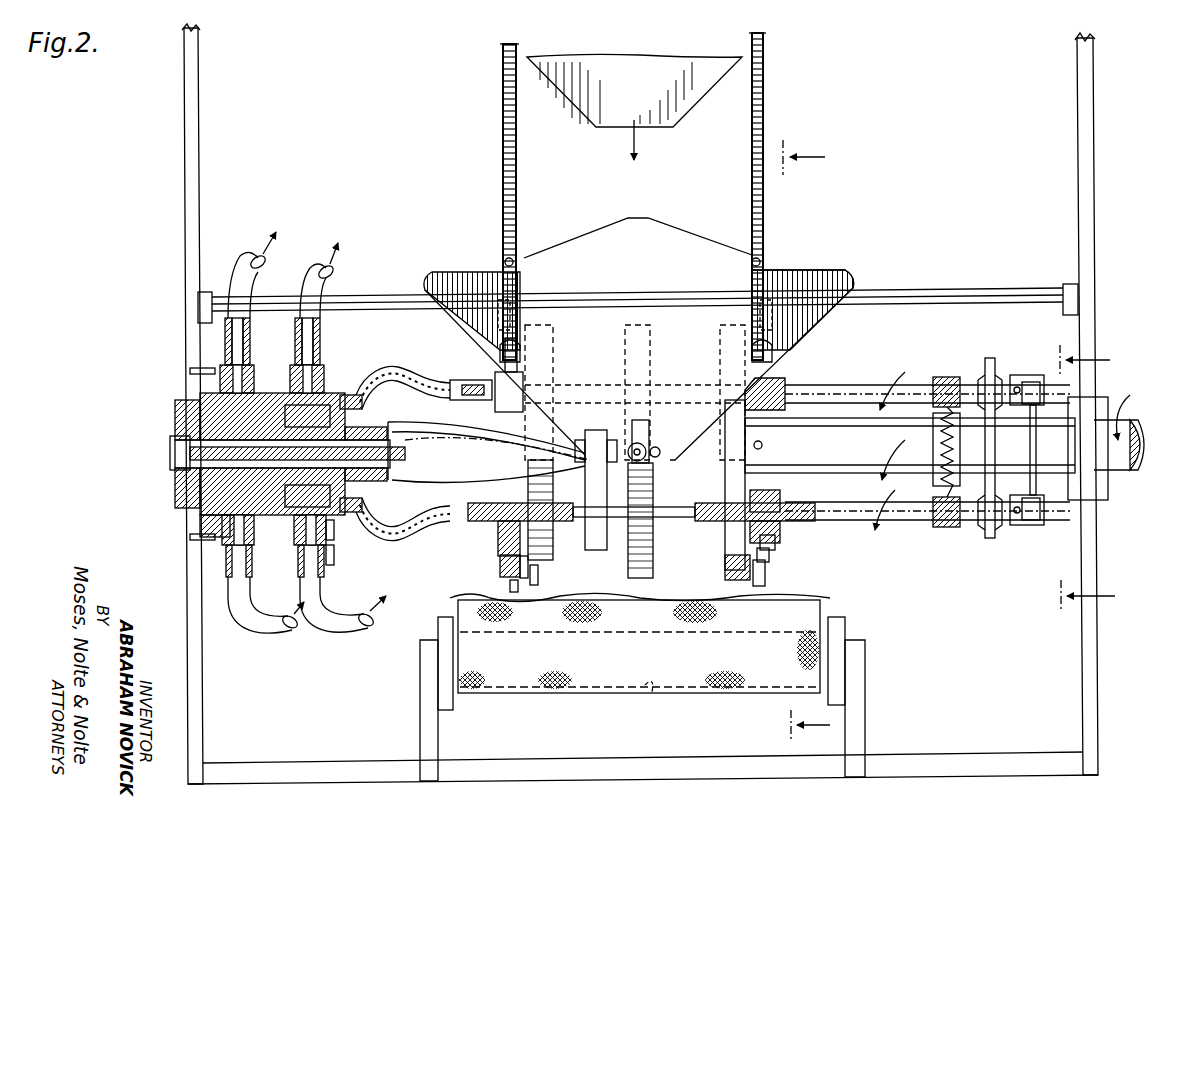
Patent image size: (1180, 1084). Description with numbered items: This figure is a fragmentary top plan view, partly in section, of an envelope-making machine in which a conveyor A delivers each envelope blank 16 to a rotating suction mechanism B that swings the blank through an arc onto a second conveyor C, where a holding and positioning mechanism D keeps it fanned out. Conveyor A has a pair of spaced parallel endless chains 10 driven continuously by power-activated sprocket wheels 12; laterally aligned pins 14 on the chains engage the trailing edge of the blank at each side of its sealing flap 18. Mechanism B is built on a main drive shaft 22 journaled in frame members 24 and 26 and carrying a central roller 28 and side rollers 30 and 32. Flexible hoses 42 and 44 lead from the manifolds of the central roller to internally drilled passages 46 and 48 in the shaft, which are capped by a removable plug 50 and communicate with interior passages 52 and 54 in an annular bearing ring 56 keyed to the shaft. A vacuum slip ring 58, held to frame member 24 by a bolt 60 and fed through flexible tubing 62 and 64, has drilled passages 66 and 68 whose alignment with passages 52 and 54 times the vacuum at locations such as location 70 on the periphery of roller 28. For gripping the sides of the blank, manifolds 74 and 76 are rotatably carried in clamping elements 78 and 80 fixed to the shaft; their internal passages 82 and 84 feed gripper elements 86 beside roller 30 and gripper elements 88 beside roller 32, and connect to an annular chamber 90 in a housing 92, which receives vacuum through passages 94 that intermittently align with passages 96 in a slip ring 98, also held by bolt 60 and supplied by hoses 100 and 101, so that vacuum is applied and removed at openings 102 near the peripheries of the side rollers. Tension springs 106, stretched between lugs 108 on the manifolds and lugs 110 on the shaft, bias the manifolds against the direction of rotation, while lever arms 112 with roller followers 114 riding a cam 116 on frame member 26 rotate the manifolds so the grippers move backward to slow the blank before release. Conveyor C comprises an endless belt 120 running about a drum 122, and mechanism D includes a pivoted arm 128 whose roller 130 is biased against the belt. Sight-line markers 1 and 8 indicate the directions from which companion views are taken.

The endless chain 10 is at (503, 75).
The sprocket wheel 12 is at (522, 300).
The pin 14 is at (505, 262).
The envelope blank 16 is at (706, 55).
The sealing flap 18 is at (664, 233).
The main drive shaft 22 is at (1158, 412).
The frame member 24 is at (185, 175).
The frame member 26 is at (1088, 138).
The central roller 28 is at (655, 578).
The side roller 30 is at (560, 580).
The side roller 32 is at (725, 560).
The flexible hose 42 is at (440, 420).
The flexible hose 44 is at (440, 468).
The internally drilled passage 46 is at (352, 396).
The internally drilled passage 48 is at (352, 512).
The removable plug 50 is at (170, 445).
The interior passage 52 is at (200, 395).
The interior passage 54 is at (185, 493).
The annular bearing ring 56 is at (190, 412).
The vacuum slip ring 58 is at (250, 352).
The bolt 60 is at (190, 371).
The flexible tubing 62 is at (268, 258).
The flexible tubing 64 is at (250, 628).
The passage 66 is at (255, 372).
The passage 68 is at (200, 522).
The location 70 is at (638, 440).
The manifold 74 is at (860, 378).
The manifold 76 is at (857, 522).
The clamping element 78 is at (990, 358).
The clamping element 80 is at (590, 550).
The internal passage 82 is at (468, 380).
The internal passage 84 is at (478, 522).
The gripper element 86 is at (518, 358).
The gripper element 88 is at (775, 380).
The annular chamber 90 is at (301, 398).
The annular housing 92 is at (334, 540).
The passage 94 is at (307, 494).
The passage 96 is at (322, 368).
The slip ring 98 is at (334, 558).
The hose 100 is at (335, 270).
The hose 101 is at (340, 628).
The opening 102 is at (518, 568).
The tension spring 106 is at (938, 425).
The lug 108 is at (945, 377).
The lug 110 is at (933, 450).
The lever arm 112 is at (1028, 375).
The roller follower 114 is at (1040, 392).
The cam 116 is at (1030, 449).
The endless belt 120 is at (460, 610).
The drum 122 is at (650, 694).
The pivoted arm 128 is at (532, 580).
The roller 130 is at (528, 588).
The section line 1 is at (813, 441).
The section line 8 is at (1097, 478).
The conveyor A is at (770, 128).
The rotating suction mechanism B is at (648, 320).
The conveyor C is at (605, 694).
The holding and positioning mechanism D is at (525, 600).